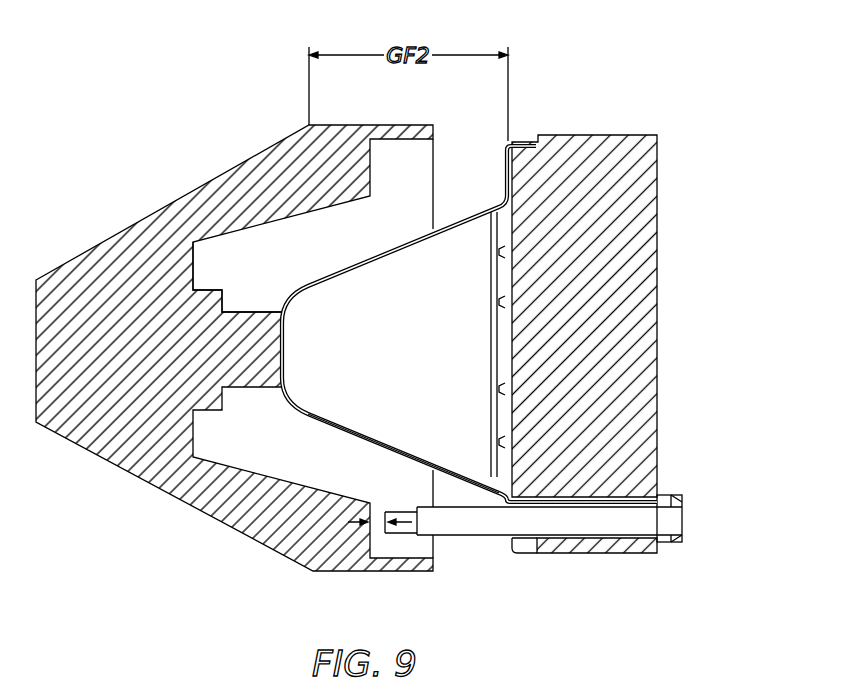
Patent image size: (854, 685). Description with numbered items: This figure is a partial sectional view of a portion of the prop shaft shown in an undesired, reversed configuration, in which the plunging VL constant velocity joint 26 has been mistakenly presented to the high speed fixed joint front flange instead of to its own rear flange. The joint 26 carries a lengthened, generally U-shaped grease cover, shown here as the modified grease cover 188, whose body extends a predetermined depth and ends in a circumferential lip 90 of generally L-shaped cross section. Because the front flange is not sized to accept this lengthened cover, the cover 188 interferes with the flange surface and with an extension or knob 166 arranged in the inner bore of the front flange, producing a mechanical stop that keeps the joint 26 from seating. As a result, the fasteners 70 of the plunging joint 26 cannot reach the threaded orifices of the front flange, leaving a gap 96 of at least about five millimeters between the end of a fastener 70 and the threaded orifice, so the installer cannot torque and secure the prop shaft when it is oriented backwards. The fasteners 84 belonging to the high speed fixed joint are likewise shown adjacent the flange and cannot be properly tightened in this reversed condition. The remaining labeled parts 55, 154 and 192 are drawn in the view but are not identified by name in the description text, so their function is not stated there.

The plunging VL constant velocity joint 26 is at (600, 122).
The plate 55 is at (612, 545).
The fasteners 70 is at (462, 522).
The fasteners 84 is at (670, 518).
The circumferential lip 90 is at (509, 558).
The gap 96 is at (352, 522).
The nozzle body 154 is at (92, 440).
The extension or knob 166 is at (257, 311).
The modified grease cover 188 is at (378, 443).
The conical liner 192 is at (387, 250).